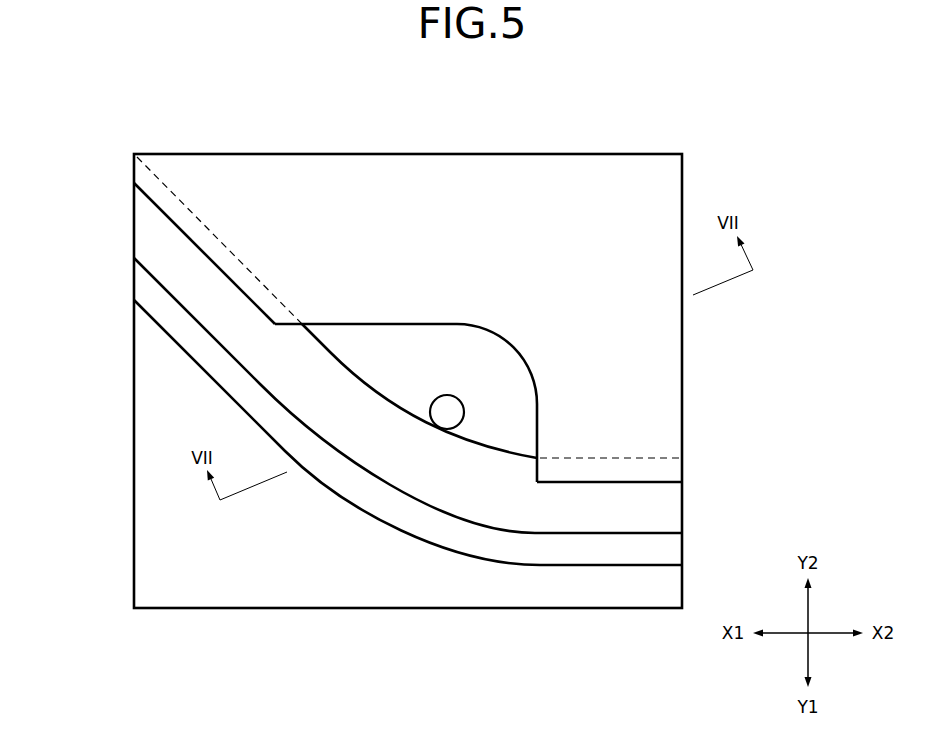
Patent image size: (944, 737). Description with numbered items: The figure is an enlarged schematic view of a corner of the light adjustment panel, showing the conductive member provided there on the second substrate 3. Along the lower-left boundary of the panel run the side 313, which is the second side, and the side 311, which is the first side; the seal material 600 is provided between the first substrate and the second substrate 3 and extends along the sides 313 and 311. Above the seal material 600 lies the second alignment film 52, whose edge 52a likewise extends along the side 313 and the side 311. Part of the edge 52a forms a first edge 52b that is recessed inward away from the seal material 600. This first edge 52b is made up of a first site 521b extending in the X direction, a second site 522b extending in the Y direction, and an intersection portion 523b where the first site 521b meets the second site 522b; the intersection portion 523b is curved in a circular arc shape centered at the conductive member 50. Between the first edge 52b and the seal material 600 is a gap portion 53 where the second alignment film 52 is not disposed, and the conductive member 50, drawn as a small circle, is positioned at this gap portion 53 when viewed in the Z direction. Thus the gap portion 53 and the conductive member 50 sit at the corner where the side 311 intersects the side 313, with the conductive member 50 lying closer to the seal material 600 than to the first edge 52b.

The second substrate 3 is at (596, 119).
The second alignment film 52 is at (408, 332).
The edge 52a is at (177, 228).
The first edge 52b is at (516, 370).
The gap portion 53 is at (495, 402).
The conductive member 50 is at (457, 430).
The first site 521b is at (325, 327).
The second site 522b is at (535, 432).
The intersection portion 523b is at (480, 327).
The seal material 600 is at (203, 298).
The side 313 is at (197, 370).
The side 311 is at (622, 567).